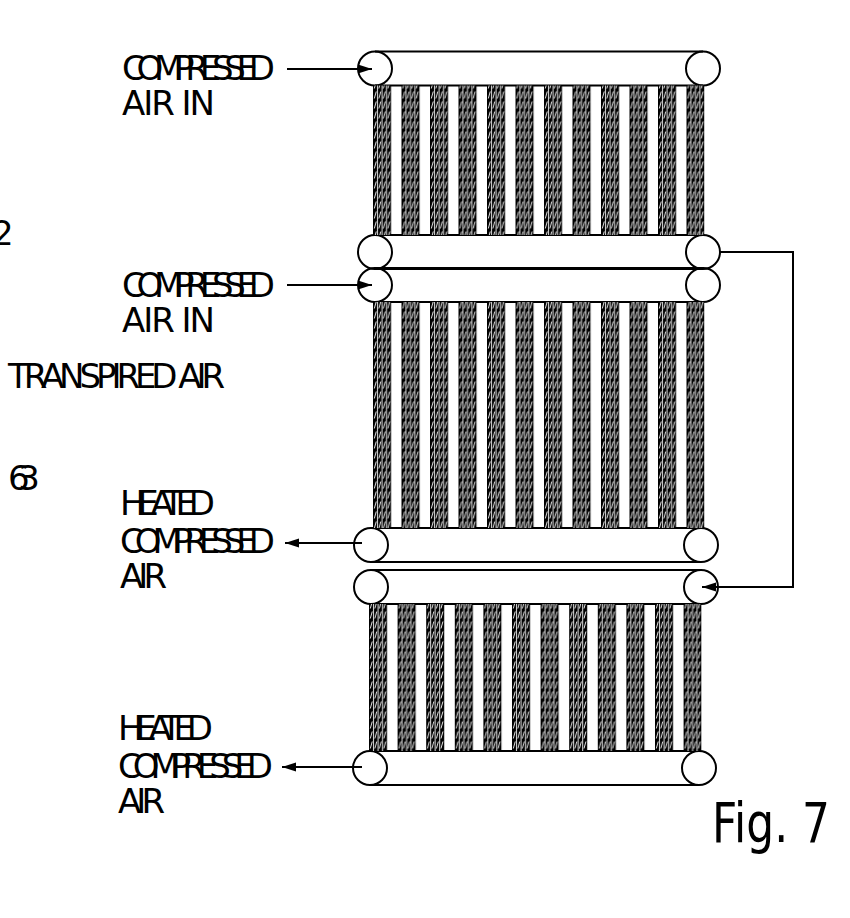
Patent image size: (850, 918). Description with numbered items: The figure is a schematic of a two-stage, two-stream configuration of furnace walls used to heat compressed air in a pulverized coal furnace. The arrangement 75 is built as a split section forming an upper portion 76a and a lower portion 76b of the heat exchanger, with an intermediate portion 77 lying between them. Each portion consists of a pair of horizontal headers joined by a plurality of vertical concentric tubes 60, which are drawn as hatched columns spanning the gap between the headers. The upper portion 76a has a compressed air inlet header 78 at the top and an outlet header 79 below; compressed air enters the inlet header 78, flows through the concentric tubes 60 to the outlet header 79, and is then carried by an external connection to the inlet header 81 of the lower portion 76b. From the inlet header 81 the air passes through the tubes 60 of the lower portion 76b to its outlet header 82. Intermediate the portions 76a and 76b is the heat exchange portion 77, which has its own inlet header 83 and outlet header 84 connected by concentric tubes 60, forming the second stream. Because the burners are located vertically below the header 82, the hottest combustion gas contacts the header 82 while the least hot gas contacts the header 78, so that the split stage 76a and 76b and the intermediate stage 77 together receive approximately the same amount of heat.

The arrangement 75 is at (769, 41).
The compressed air inlet header 78 is at (570, 72).
The outlet header 79 is at (703, 252).
The inlet header 83 is at (703, 290).
The outlet header 84 is at (701, 545).
The inlet header 81 is at (369, 588).
The outlet header 82 is at (548, 770).
The concentric tubes 60 is at (680, 117).
The upper portion 76a is at (738, 182).
The lower portion 76b is at (733, 698).
The intermediate portion 77 is at (702, 403).